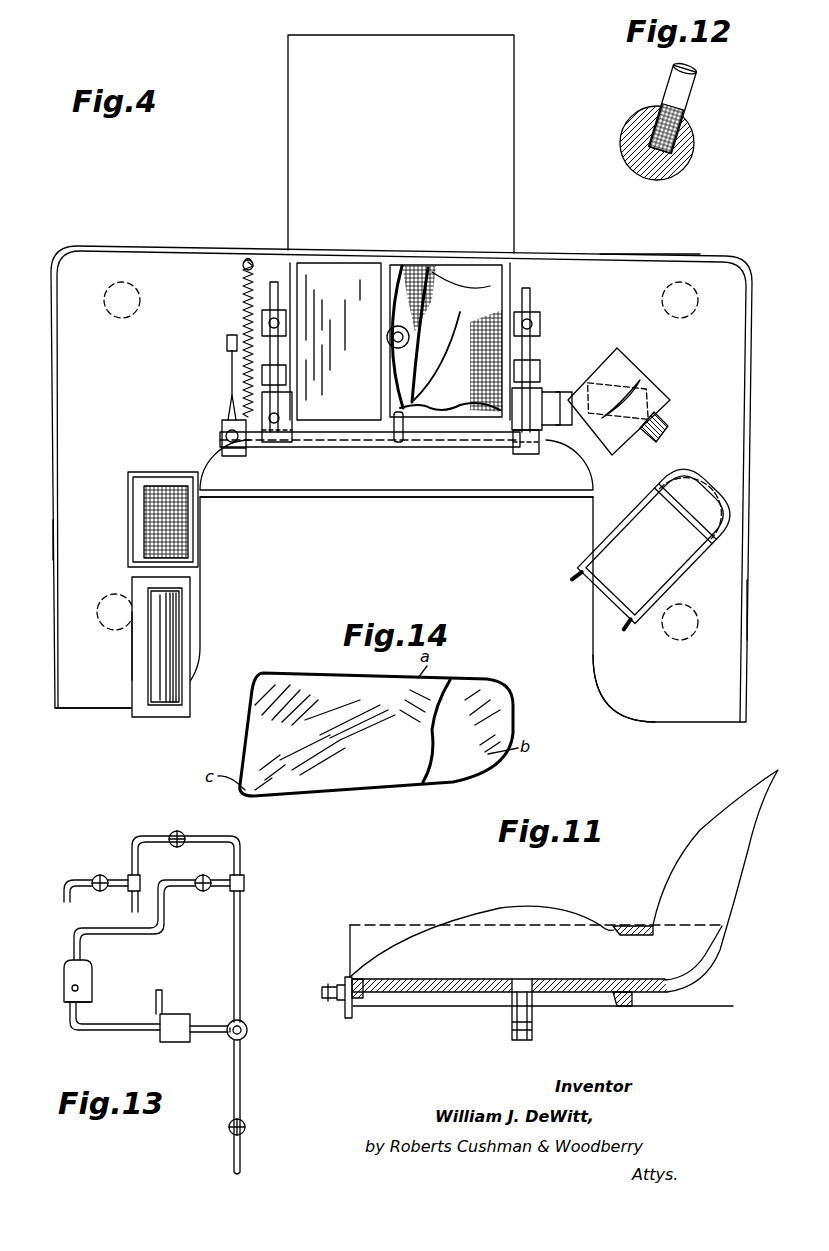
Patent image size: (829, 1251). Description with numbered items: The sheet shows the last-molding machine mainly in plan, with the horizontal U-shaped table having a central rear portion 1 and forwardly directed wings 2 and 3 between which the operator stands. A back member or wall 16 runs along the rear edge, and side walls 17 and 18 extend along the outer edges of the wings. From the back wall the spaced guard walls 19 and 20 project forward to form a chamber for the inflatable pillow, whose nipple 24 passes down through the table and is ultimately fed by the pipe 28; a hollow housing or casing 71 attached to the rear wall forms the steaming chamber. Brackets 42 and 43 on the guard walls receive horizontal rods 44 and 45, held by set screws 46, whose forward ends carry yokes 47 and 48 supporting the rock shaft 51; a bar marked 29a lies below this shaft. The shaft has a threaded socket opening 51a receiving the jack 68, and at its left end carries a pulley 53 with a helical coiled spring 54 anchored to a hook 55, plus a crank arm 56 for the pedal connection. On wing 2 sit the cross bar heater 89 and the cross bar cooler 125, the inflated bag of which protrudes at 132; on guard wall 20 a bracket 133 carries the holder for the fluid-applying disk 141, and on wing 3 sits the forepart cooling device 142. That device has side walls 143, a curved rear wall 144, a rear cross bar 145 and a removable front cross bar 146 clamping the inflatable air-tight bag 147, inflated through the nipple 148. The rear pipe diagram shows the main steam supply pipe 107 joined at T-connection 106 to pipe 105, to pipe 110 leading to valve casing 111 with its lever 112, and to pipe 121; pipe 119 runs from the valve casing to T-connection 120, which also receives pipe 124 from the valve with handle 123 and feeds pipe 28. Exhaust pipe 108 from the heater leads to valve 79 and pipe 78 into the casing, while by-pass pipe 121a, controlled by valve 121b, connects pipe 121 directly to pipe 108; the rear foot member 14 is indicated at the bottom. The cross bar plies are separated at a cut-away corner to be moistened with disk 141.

In FIG. 4, the central rear portion 1 is at (51, 396).
In FIG. 4, the left-hand wing 2 is at (95, 715).
In FIG. 4, the right-hand wing 3 is at (622, 688).
In FIG. 13, the rear foot member 14 is at (292, 1104).
In FIG. 4, the back member or wall 16 is at (612, 262).
In FIG. 4, the side wall 17 is at (53, 548).
In FIG. 4, the side wall 18 is at (747, 615).
In FIG. 4, the guard wall 19 is at (298, 262).
In FIG. 4, the guard wall 20 is at (512, 268).
In FIG. 4, the nipple 24 is at (411, 337).
In FIG. 13, the pipe 28 is at (64, 990).
In FIG. 4, the cross bar 29a is at (525, 500).
In FIG. 4, the supporting bracket 42 is at (240, 352).
In FIG. 4, the supporting bracket 43 is at (540, 370).
In FIG. 4, the horizontal rod 44 is at (272, 282).
In FIG. 4, the horizontal rod 45 is at (532, 290).
In FIG. 4, the set screw 46 is at (540, 320).
In FIG. 4, the yoke 47 is at (292, 402).
In FIG. 4, the yoke 48 is at (555, 388).
In FIG. 4, the rock shaft 51 is at (372, 445).
In FIG. 12, the rock shaft 51 is at (622, 136).
In FIG. 12, the socket opening 51a is at (638, 113).
In FIG. 4, the pulley 53 is at (248, 452).
In FIG. 4, the helical coiled spring 54 is at (245, 282).
In FIG. 4, the hook 55 is at (244, 262).
In FIG. 4, the crank arm 56 is at (227, 410).
In FIG. 4, the jack 68 is at (396, 418).
In FIG. 4, the hollow housing or casing 71 is at (514, 80).
In FIG. 13, the pipe 78 is at (62, 898).
In FIG. 13, the controlling valve 79 is at (102, 874).
In FIG. 4, the cross bar heater 89 is at (128, 538).
In FIG. 13, the pipe 105 is at (245, 1022).
In FIG. 13, the T-connection 106 is at (248, 1036).
In FIG. 13, the main steam supply pipe 107 is at (243, 1102).
In FIG. 13, the exhaust pipe 108 is at (132, 908).
In FIG. 13, the pipe 110 is at (210, 1038).
In FIG. 13, the valve casing 111 is at (182, 1014).
In FIG. 13, the actuating handle or lever 112 is at (156, 1001).
In FIG. 13, the pipe 119 is at (125, 1035).
In FIG. 13, the T-connection 120 is at (88, 985).
In FIG. 13, the pipe 121 is at (246, 936).
In FIG. 13, the by-pass pipe 121a is at (236, 840).
In FIG. 13, the valve 121b is at (190, 822).
In FIG. 13, the controlling handle 123 is at (204, 875).
In FIG. 13, the pipe 124 is at (112, 928).
In FIG. 4, the cross bar cooler 125 is at (132, 658).
In FIG. 4, the protruding portion of bag 132 is at (185, 652).
In FIG. 4, the bracket 133 is at (565, 432).
In FIG. 4, the fluid-applying disk 141 is at (640, 385).
In FIG. 4, the forepart cooling device 142 is at (584, 590).
In FIG. 11, the forepart cooling device 142 is at (566, 897).
In FIG. 11, the side walls 143 is at (380, 928).
In FIG. 11, the curved rear wall 144 is at (722, 948).
In FIG. 11, the cross bar 145 is at (635, 920).
In FIG. 11, the cross bar 146 is at (330, 986).
In FIG. 11, the inflatable air-tight bag 147 is at (513, 906).
In FIG. 11, the nipple 148 is at (512, 1020).